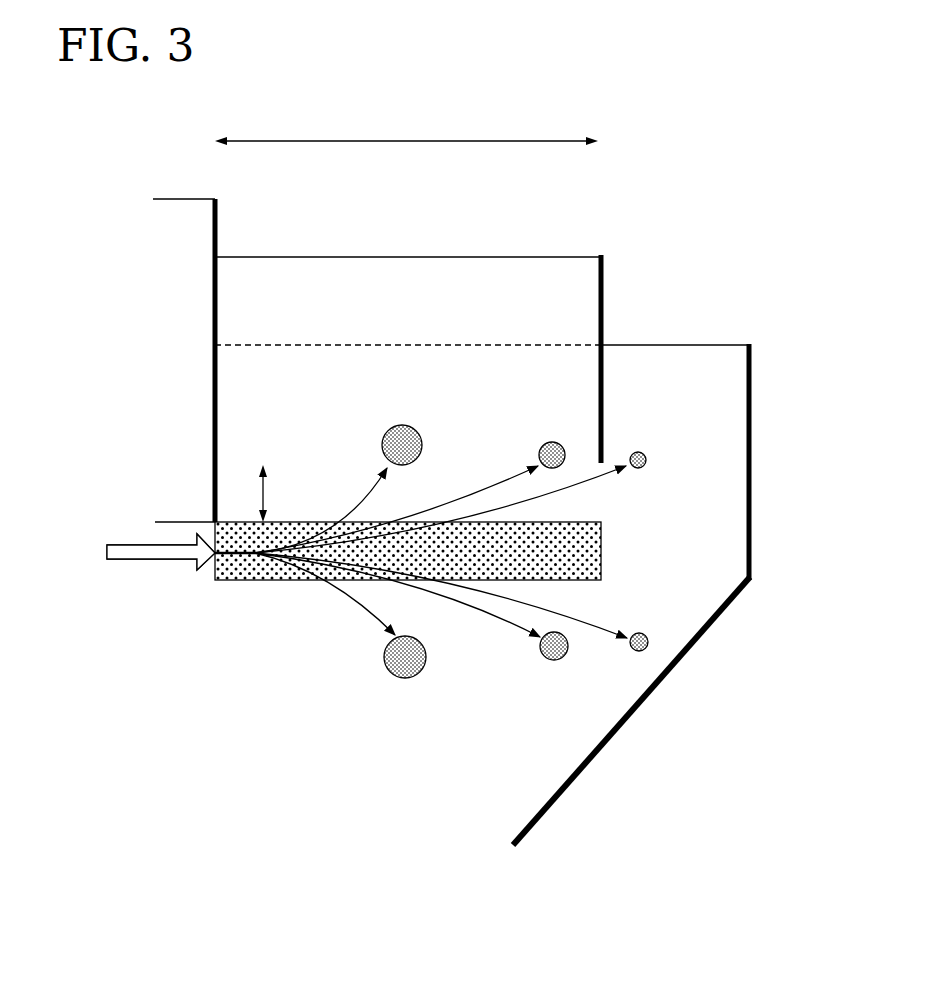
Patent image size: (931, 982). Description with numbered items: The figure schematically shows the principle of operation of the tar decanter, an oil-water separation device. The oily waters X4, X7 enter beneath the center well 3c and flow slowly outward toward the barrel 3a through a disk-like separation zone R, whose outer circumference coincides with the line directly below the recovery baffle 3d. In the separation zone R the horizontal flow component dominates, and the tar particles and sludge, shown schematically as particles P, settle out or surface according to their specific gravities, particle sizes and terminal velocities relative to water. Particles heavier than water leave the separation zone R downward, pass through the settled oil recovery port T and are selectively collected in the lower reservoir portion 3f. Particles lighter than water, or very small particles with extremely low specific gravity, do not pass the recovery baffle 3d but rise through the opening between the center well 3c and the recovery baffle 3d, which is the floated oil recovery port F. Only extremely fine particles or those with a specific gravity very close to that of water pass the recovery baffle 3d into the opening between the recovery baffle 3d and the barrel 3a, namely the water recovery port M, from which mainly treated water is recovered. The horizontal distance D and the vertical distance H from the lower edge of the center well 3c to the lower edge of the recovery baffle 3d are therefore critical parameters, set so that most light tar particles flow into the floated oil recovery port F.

The barrel 3a is at (751, 524).
The center well 3c is at (216, 233).
The recovery baffle 3d is at (603, 279).
The lower reservoir portion 3f is at (673, 670).
The floated oil recovery port F is at (477, 447).
The water recovery port M is at (700, 468).
The separation zone R is at (248, 580).
The particles P is at (397, 677).
The settled oil recovery port T is at (463, 657).
The vertical distance H is at (277, 493).
The horizontal distance D is at (406, 124).
The oily water X4 is at (116, 551).
The oily water X7 is at (116, 551).